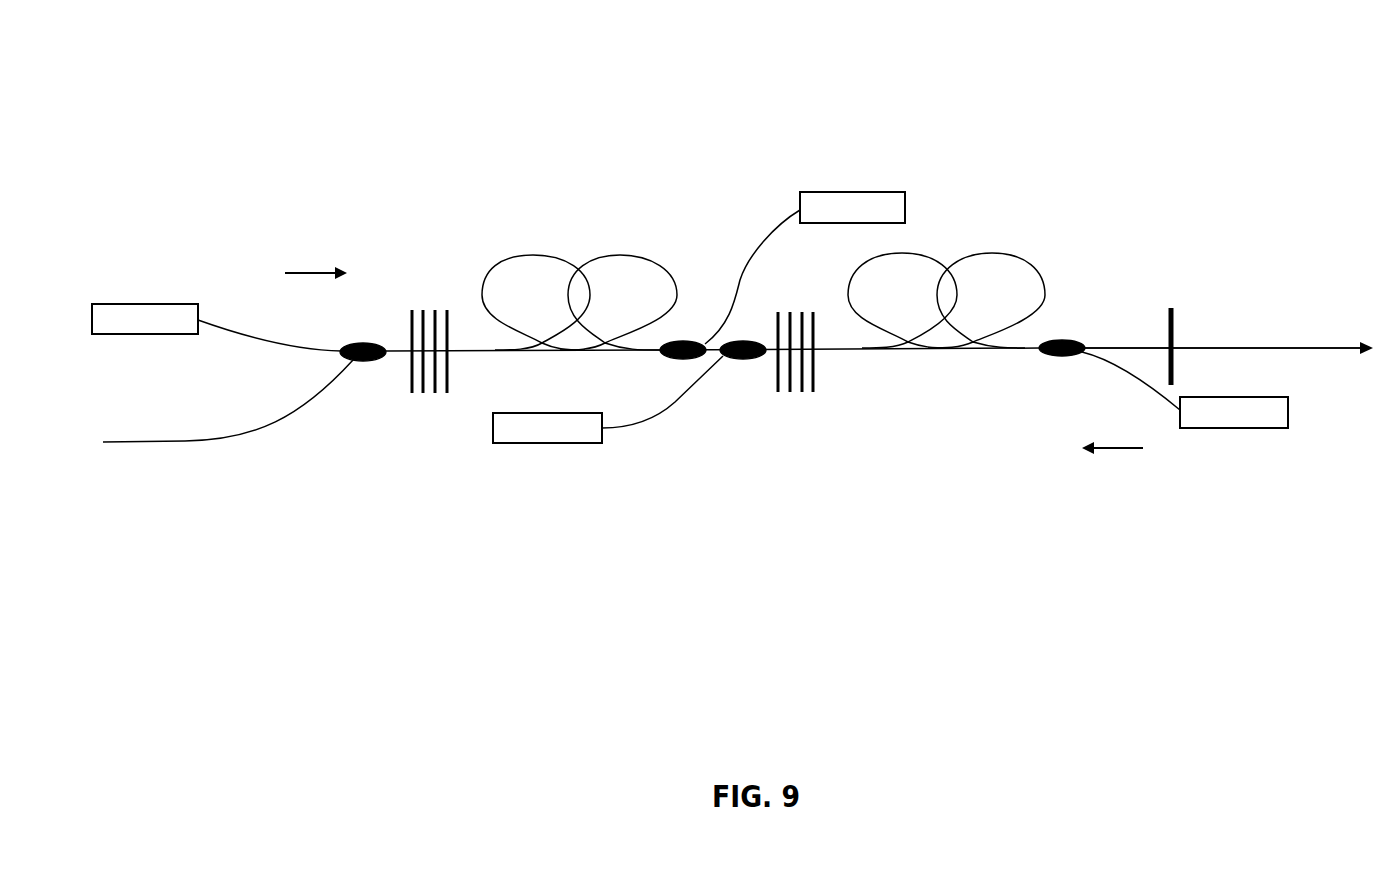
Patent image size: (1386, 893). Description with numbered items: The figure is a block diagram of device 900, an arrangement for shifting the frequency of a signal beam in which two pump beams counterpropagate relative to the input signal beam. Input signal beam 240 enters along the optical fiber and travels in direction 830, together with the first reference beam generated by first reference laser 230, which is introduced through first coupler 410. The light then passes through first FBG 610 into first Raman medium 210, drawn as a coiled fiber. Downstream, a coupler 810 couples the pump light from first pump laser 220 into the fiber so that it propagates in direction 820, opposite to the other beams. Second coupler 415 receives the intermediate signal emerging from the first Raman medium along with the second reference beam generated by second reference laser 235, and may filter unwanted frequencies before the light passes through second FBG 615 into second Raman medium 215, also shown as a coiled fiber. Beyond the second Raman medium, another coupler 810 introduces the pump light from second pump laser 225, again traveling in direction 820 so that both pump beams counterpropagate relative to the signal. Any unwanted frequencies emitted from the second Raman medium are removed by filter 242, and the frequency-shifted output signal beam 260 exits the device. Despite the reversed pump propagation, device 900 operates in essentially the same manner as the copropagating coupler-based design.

The device 900 is at (452, 108).
The first reference laser 230 is at (133, 331).
The input signal beam 240 is at (143, 438).
The direction 830 is at (328, 259).
The first coupler 410 is at (383, 336).
The first FBG 610 is at (445, 302).
The first Raman medium 210 is at (597, 244).
The coupler 810 is at (678, 386).
The first pump laser 220 is at (897, 219).
The second coupler 415 is at (765, 386).
The second reference laser 235 is at (538, 441).
The second FBG 615 is at (813, 302).
The second Raman medium 215 is at (967, 246).
The filter 242 is at (1171, 308).
The output signal beam 260 is at (1300, 341).
The second pump laser 225 is at (1278, 424).
The direction 820 is at (1140, 477).